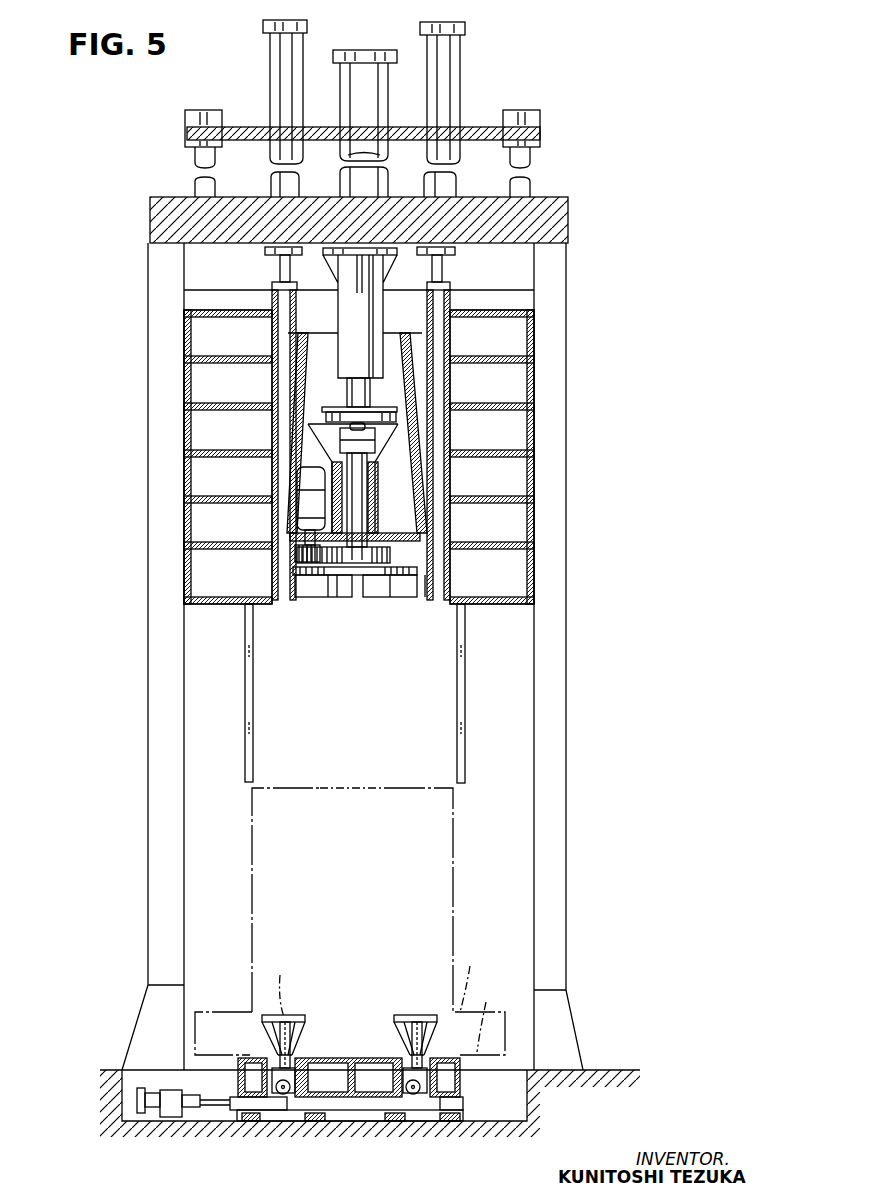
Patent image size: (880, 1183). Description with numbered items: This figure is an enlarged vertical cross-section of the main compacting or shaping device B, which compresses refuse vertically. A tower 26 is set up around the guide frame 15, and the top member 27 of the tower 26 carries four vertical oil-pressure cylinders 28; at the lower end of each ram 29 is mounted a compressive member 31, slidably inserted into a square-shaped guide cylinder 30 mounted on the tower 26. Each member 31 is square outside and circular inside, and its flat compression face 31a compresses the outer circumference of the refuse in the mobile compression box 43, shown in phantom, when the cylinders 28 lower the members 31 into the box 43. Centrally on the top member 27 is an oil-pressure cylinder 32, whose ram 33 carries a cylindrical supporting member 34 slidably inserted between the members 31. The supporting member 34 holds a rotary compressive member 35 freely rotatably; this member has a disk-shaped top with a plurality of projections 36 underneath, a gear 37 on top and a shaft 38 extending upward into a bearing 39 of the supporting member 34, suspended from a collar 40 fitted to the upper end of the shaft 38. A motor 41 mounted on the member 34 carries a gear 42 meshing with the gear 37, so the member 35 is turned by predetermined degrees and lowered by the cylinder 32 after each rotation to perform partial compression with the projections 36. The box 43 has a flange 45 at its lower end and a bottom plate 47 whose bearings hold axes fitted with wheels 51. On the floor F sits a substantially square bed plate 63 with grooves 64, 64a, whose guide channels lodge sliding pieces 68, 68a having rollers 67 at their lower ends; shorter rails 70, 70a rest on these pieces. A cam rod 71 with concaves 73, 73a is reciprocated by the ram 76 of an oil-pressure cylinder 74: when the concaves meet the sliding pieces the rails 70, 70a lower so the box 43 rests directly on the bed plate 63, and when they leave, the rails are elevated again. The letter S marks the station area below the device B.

The guide frame 15 is at (466, 706).
The tower 26 is at (566, 633).
The top member 27 is at (547, 217).
The oil-pressure cylinder 28 is at (272, 67).
The ram 29 is at (279, 266).
The guide cylinder 30 is at (454, 427).
The compressive member 31 is at (452, 288).
The compression face 31a is at (433, 600).
The oil-pressure cylinder 32 is at (379, 84).
The ram 33 is at (358, 388).
The supporting member 34 is at (310, 352).
The rotary compressive member 35 is at (345, 597).
The projections 36 is at (358, 600).
The gear 37 is at (390, 554).
The shaft 38 is at (368, 484).
The bearing 39 is at (378, 507).
The collar 40 is at (378, 447).
The motor 41 is at (310, 482).
The gear 42 is at (295, 555).
The mobile compression box 43 is at (252, 898).
The flange 45 is at (477, 977).
The bottom plate 47 is at (494, 1016).
The wheel 51 is at (291, 987).
The bed plate 63 is at (347, 1060).
The groove 64 is at (405, 1052).
The groove 64a is at (297, 1052).
The roller 67 is at (290, 1097).
The sliding piece 68 is at (396, 1078).
The sliding piece 68a is at (304, 1078).
The shorter rail 70 is at (428, 1068).
The shorter rail 70a is at (278, 1068).
The cam rod 71 is at (463, 1104).
The concave 73 is at (444, 1115).
The concave 73a is at (312, 1112).
The oil-pressure cylinder 74 is at (152, 1093).
The ram 76 is at (222, 1097).
The main compacting or shaping device B is at (170, 120).
The station S is at (360, 1002).
The floor F is at (600, 1068).